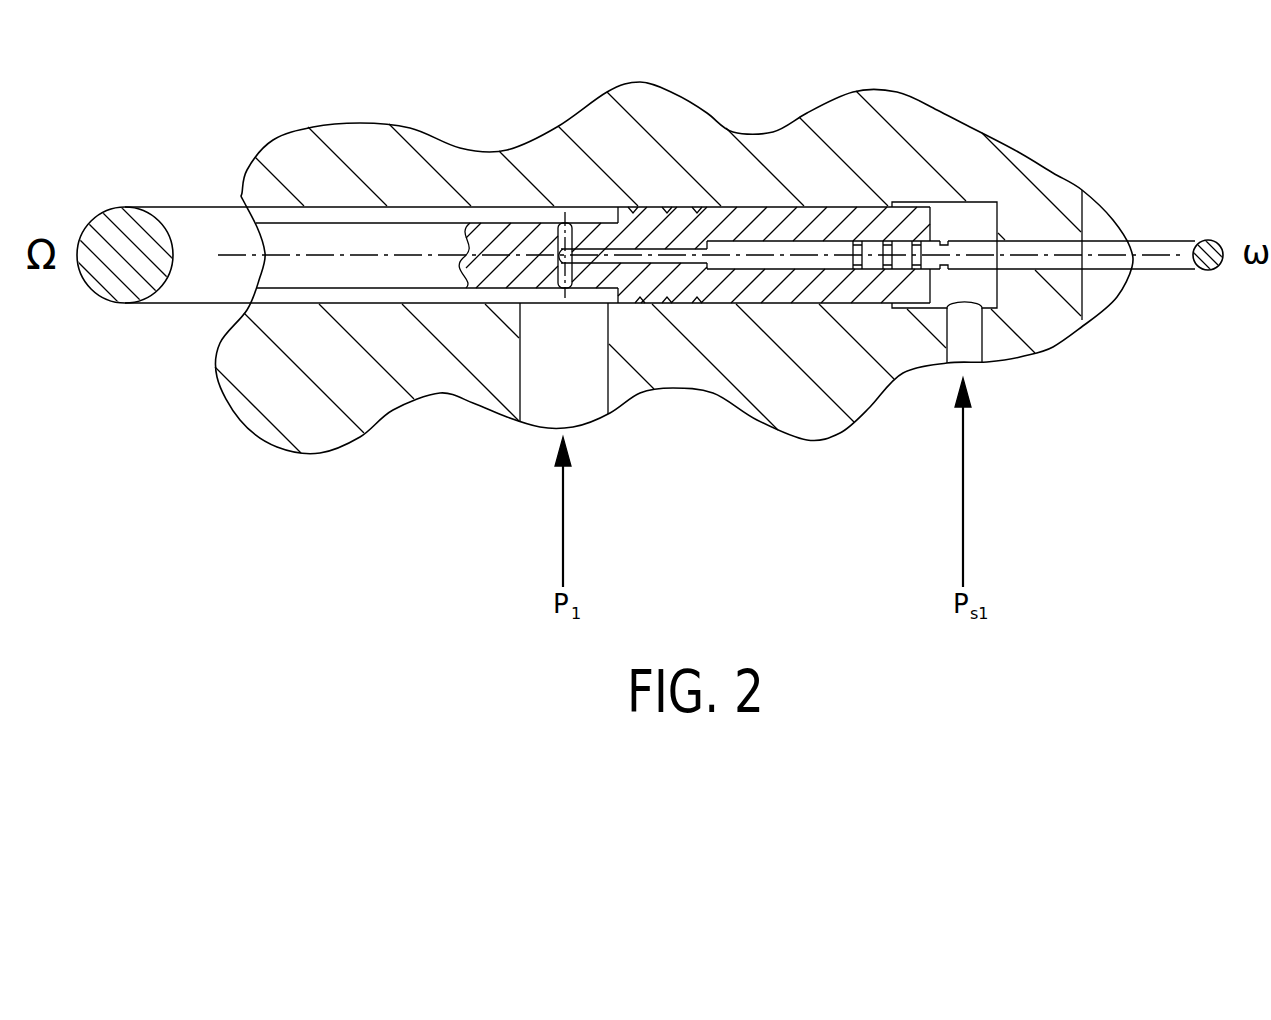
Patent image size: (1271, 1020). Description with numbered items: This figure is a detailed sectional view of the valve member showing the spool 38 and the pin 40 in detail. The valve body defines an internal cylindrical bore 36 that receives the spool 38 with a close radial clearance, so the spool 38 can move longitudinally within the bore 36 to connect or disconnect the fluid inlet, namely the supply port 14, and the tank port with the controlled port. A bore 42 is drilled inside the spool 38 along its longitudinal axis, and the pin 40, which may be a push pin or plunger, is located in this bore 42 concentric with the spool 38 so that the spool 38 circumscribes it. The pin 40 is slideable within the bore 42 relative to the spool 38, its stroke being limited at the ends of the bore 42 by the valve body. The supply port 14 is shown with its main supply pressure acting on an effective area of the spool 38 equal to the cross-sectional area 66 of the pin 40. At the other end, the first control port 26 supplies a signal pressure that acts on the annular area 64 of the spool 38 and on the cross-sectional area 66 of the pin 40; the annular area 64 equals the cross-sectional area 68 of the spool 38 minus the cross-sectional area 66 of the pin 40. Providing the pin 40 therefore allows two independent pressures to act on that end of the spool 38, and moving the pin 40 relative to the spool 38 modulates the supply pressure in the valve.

The supply port 14 is at (540, 397).
The first control port 26 is at (968, 343).
The cylindrical bore 36 is at (408, 207).
The spool 38 is at (362, 255).
The pin 40 is at (970, 253).
The bore 42 is at (940, 238).
The annular area 64 is at (1000, 217).
The cross-sectional area 66 is at (1205, 260).
The cross-sectional area 68 is at (120, 263).